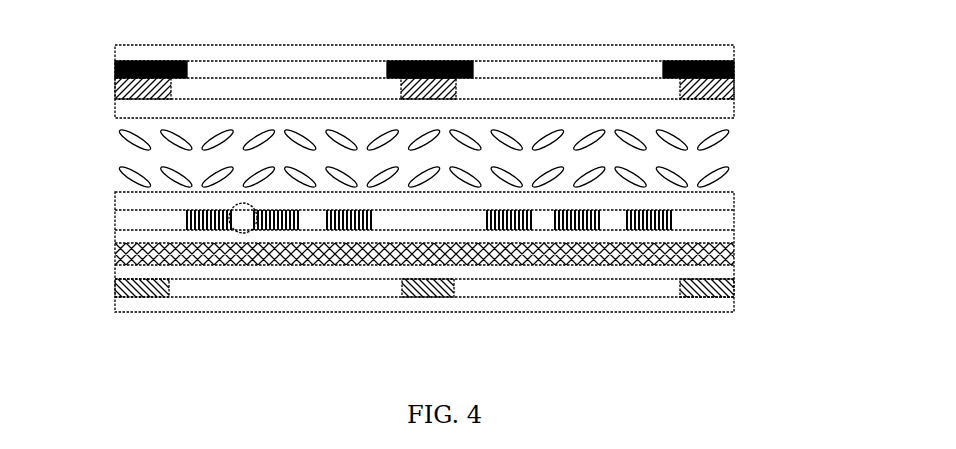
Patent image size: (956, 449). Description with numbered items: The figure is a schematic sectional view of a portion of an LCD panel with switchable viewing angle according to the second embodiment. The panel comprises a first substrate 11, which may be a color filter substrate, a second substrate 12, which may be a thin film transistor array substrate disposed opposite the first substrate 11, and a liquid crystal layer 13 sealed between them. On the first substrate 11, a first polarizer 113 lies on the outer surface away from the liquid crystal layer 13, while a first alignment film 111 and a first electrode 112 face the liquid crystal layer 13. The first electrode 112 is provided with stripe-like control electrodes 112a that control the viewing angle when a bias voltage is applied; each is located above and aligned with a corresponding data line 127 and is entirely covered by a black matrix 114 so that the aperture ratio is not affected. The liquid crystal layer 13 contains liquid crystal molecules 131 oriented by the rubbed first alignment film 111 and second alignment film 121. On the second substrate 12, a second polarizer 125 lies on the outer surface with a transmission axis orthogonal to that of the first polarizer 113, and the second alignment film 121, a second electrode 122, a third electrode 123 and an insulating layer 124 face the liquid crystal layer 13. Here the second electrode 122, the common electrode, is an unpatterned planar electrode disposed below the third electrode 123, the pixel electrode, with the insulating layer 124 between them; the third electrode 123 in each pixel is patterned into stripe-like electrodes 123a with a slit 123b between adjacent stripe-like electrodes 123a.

The first substrate 11 is at (107, 43).
The first alignment film 111 is at (735, 108).
The first electrode 112 is at (735, 88).
The stripe-like control electrode 112a is at (452, 61).
The first polarizer 113 is at (728, 52).
The black matrix 114 is at (735, 70).
The second substrate 12 is at (107, 187).
The second alignment film 121 is at (737, 198).
The second electrode 122 is at (737, 254).
The third electrode 123 is at (578, 230).
The stripe-like electrode 123a is at (350, 230).
The slit 123b is at (243, 233).
The insulating layer 124 is at (737, 238).
The second polarizer 125 is at (734, 312).
The data line 127 is at (157, 297).
The liquid crystal layer 13 is at (107, 127).
The liquid crystal molecule 131 is at (700, 180).